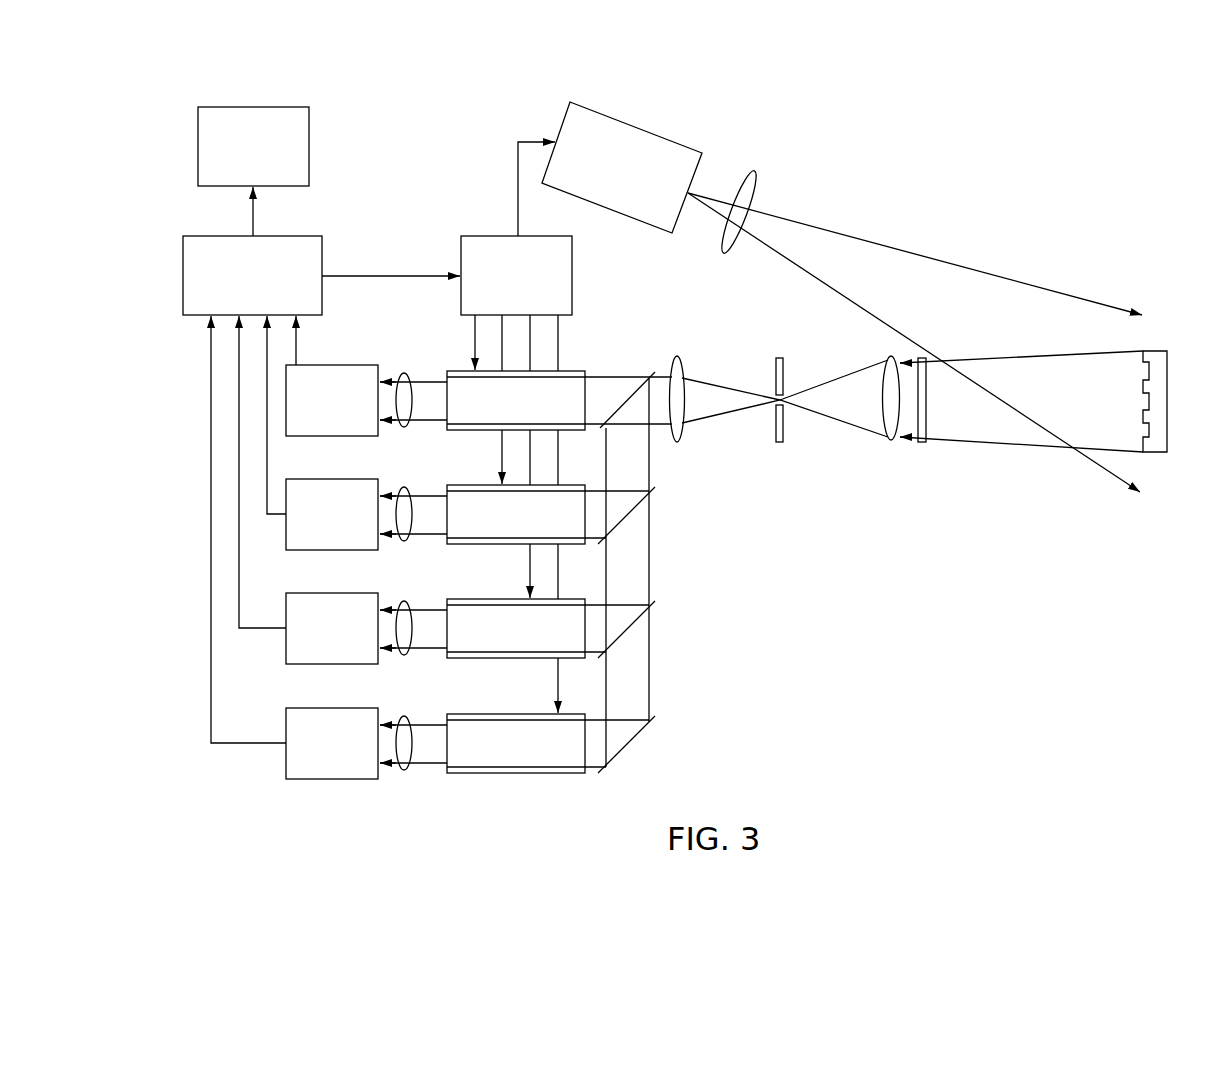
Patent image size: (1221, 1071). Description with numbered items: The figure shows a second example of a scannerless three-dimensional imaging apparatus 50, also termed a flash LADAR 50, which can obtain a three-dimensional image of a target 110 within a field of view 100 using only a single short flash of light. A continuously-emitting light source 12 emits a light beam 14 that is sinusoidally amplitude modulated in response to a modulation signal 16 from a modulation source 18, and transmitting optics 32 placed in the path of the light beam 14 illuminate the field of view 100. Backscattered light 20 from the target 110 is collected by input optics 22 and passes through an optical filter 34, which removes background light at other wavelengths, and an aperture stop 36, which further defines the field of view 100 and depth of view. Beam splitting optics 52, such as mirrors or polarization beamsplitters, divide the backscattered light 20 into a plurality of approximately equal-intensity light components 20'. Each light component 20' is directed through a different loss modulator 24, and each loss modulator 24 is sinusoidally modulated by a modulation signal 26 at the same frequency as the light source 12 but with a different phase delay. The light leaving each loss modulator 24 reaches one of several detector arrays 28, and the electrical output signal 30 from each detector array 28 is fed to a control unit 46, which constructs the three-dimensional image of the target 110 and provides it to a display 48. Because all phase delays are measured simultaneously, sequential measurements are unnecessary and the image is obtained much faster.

The light source 12 is at (611, 193).
The light beam 14 is at (887, 247).
The modulation signal 16 is at (516, 188).
The modulation source 18 is at (507, 302).
The backscattered light 20 is at (785, 398).
The light components 20' is at (504, 556).
The input optics 22 is at (882, 408).
The loss modulator 24 is at (571, 775).
The modulation signal 26 is at (560, 338).
The detector array 28 is at (323, 772).
The electrical output signal 30 is at (296, 345).
The transmitting optics 32 is at (754, 170).
The optical filter 34 is at (922, 443).
The aperture stop 36 is at (775, 363).
The control unit 46 is at (243, 302).
The display 48 is at (244, 176).
The scannerless 3-D imaging apparatus 50 is at (861, 685).
The beam splitting optics 52 is at (623, 405).
The field of view 100 is at (1102, 393).
The target 110 is at (1157, 452).